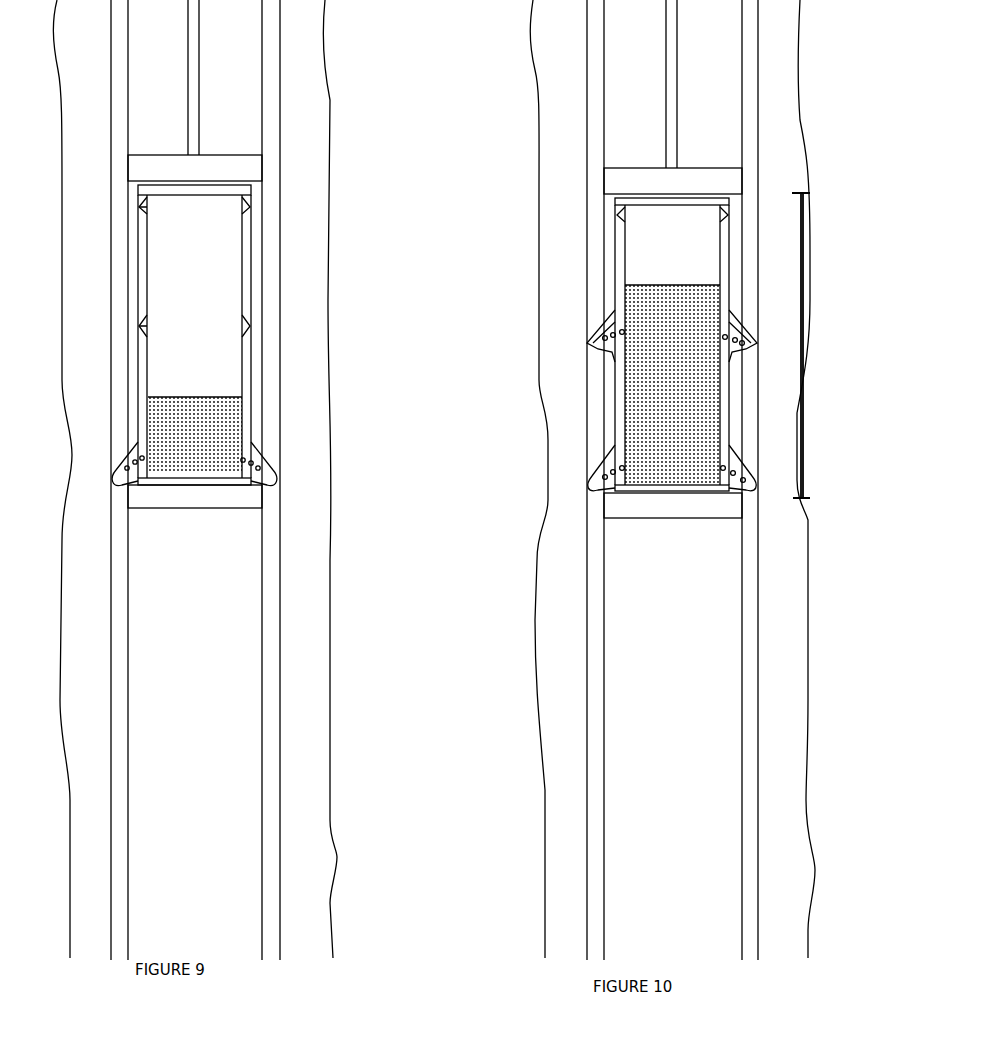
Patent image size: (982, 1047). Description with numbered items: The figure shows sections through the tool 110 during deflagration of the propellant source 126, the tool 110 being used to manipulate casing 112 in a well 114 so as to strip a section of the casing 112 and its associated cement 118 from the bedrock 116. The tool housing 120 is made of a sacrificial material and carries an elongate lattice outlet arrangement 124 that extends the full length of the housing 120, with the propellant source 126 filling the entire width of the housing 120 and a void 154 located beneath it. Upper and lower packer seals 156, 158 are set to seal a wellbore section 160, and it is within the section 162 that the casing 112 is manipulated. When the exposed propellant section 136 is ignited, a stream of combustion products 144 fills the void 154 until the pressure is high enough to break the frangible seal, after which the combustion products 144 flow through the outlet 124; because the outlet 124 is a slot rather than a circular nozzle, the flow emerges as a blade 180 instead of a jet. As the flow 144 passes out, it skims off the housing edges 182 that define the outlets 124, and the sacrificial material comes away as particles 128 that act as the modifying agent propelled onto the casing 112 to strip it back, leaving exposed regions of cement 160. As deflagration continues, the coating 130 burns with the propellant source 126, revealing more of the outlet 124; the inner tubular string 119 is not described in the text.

In FIG. 9, the tool 110 is at (245, 144).
In FIG. 10, the tool 110 is at (625, 154).
In FIG. 9, the casing 112 is at (272, 712).
In FIG. 10, the casing 112 is at (593, 712).
In FIG. 9, the well 114 is at (233, 808).
In FIG. 10, the well 114 is at (640, 807).
In FIG. 9, the bedrock 116 is at (352, 813).
In FIG. 10, the bedrock 116 is at (498, 817).
In FIG. 9, the cement 118 is at (310, 883).
In FIG. 10, the cement 118 is at (563, 887).
In FIG. 9, the inner tubular string 119 is at (197, 77).
In FIG. 10, the inner tubular string 119 is at (668, 84).
In FIG. 9, the tool housing 120 is at (243, 277).
In FIG. 10, the tool housing 120 is at (620, 265).
In FIG. 9, the outlet arrangement 124 is at (248, 327).
In FIG. 10, the outlet arrangement 124 is at (610, 335).
In FIG. 9, the propellant source 126 is at (205, 305).
In FIG. 10, the propellant source 126 is at (663, 272).
In FIG. 9, the particles 128 is at (120, 477).
In FIG. 10, the particles 128 is at (743, 487).
In FIG. 9, the coating 130 is at (245, 227).
In FIG. 10, the coating 130 is at (625, 252).
In FIG. 9, the exposed propellant section 136 is at (250, 399).
In FIG. 10, the exposed propellant section 136 is at (677, 283).
In FIG. 9, the combustion products 144 is at (205, 425).
In FIG. 10, the combustion products 144 is at (633, 413).
In FIG. 9, the void 154 is at (217, 463).
In FIG. 10, the void 154 is at (655, 418).
In FIG. 9, the upper packer seal 156 is at (227, 167).
In FIG. 10, the upper packer seal 156 is at (615, 187).
In FIG. 9, the lower packer seal 158 is at (198, 495).
In FIG. 10, the lower packer seal 158 is at (618, 507).
In FIG. 9, the wellbore section 160 is at (122, 483).
In FIG. 10, the wellbore section 160 is at (760, 493).
In FIG. 10, the section 162 is at (818, 345).
In FIG. 9, the blade 180 is at (267, 470).
In FIG. 10, the blade 180 is at (598, 342).
In FIG. 9, the housing edges 182 is at (143, 335).